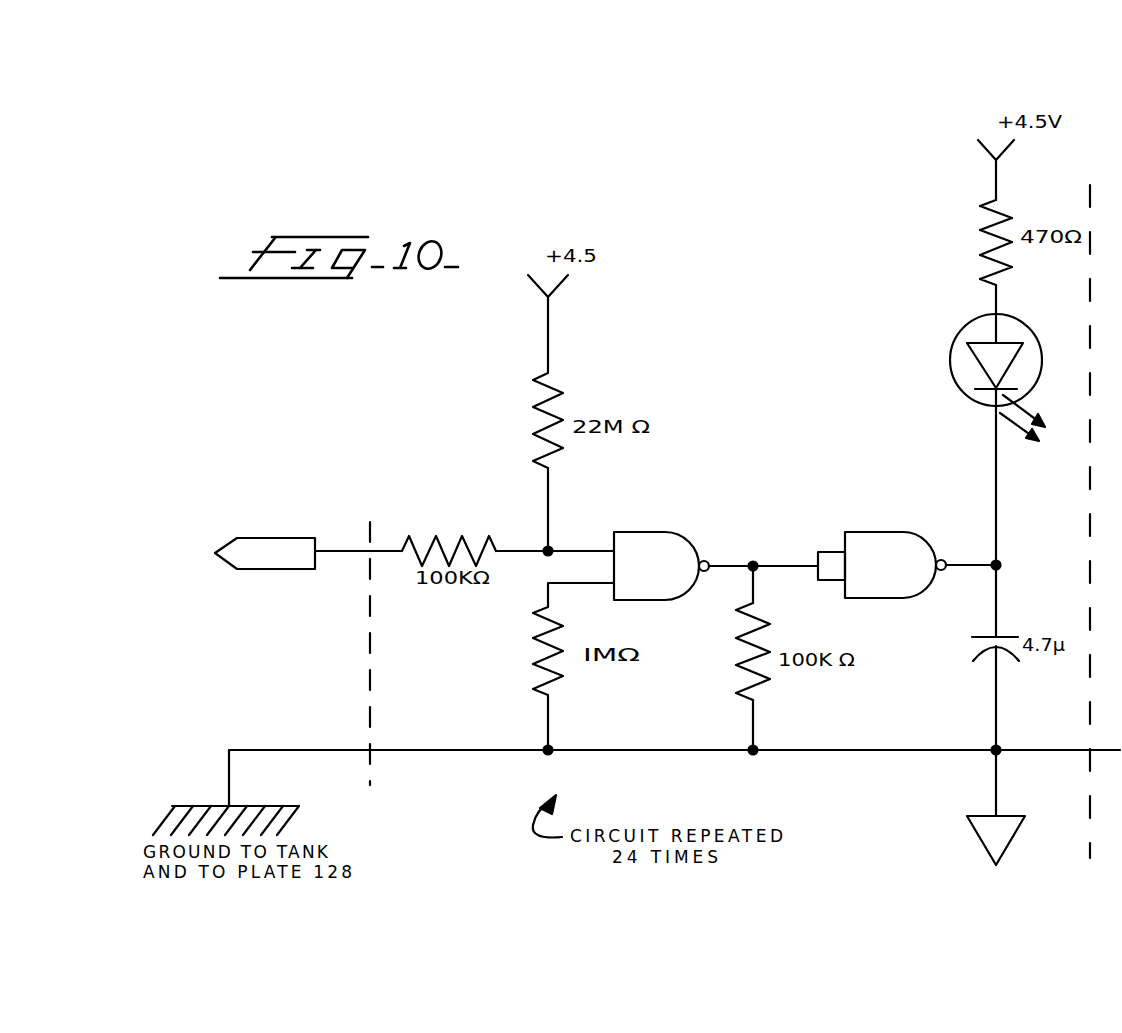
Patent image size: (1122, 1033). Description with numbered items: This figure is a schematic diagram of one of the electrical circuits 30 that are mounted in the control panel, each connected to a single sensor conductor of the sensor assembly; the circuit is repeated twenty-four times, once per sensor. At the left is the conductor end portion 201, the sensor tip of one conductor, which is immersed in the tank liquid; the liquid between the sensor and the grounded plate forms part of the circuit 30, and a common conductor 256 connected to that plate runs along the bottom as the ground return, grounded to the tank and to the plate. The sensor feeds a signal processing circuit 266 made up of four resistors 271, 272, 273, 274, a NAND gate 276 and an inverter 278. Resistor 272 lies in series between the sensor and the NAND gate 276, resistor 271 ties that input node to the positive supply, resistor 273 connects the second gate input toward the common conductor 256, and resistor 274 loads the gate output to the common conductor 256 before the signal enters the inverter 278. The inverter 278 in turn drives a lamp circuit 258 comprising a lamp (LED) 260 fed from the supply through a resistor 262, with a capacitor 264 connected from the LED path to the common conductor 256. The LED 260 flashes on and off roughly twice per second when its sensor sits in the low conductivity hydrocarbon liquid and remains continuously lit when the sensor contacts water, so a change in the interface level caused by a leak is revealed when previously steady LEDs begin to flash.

The electrical circuit 30 is at (788, 302).
The conductor end portion 201 is at (284, 545).
The common conductor 256 is at (484, 751).
The lamp circuit 258 is at (925, 500).
The lamp (LED) 260 is at (957, 372).
The resistor 262 is at (986, 259).
The capacitor 264 is at (976, 653).
The signal processing circuit 266 is at (432, 476).
The resistor 271 is at (541, 440).
The resistor 272 is at (446, 548).
The resistor 273 is at (541, 666).
The resistor 274 is at (740, 664).
The NAND gate 276 is at (680, 540).
The inverter 278 is at (888, 598).